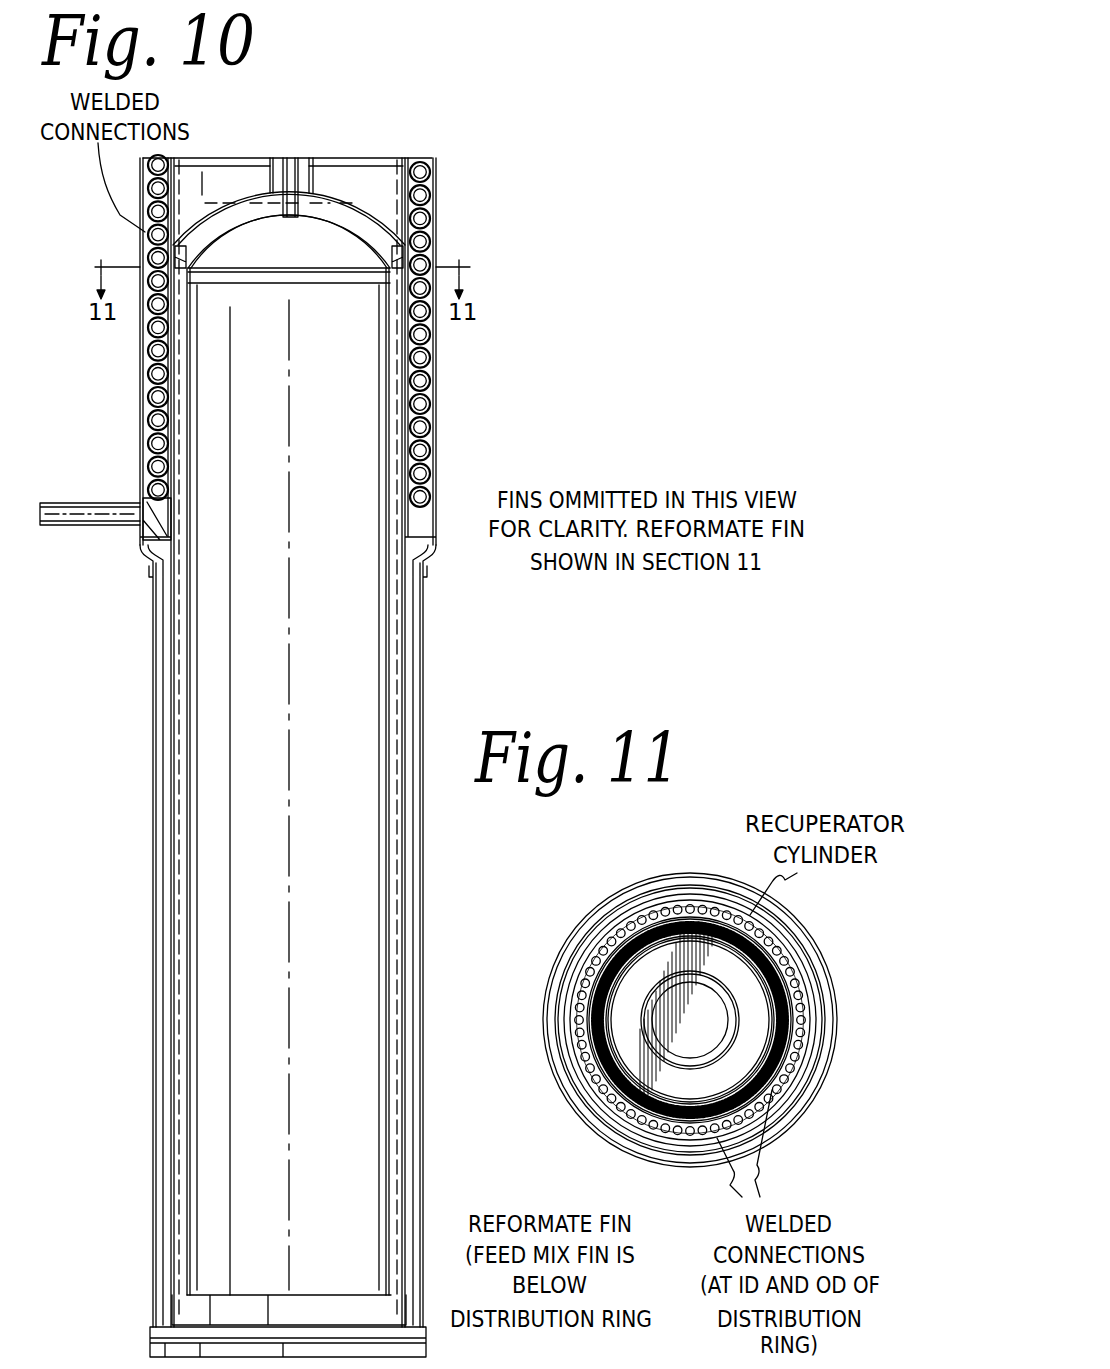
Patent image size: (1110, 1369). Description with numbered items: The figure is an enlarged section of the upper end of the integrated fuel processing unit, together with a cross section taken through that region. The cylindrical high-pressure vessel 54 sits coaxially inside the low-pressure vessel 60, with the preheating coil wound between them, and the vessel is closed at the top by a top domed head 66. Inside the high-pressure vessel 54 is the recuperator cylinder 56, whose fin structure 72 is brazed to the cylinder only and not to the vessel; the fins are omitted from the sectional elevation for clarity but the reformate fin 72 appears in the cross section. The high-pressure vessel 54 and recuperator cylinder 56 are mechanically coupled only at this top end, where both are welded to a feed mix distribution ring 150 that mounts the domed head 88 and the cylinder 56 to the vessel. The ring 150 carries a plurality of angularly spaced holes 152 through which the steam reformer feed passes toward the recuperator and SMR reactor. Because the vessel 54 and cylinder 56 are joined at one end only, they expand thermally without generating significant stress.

In FIG. 10, the high-pressure vessel 54 is at (432, 337).
In FIG. 11, the high-pressure vessel 54 is at (690, 905).
In FIG. 10, the recuperator cylinder 56 is at (432, 425).
In FIG. 10, the low-pressure vessel 60 is at (148, 586).
In FIG. 11, the low-pressure vessel 60 is at (783, 1093).
In FIG. 10, the top domed head 66 is at (356, 200).
In FIG. 10, the domed head 88 is at (227, 225).
In FIG. 10, the feed mix distribution ring 150 is at (408, 258).
In FIG. 11, the feed mix distribution ring 150 is at (607, 935).
In FIG. 11, the angularly spaced holes 152 is at (580, 992).
In FIG. 11, the fin structure 72 is at (600, 1095).